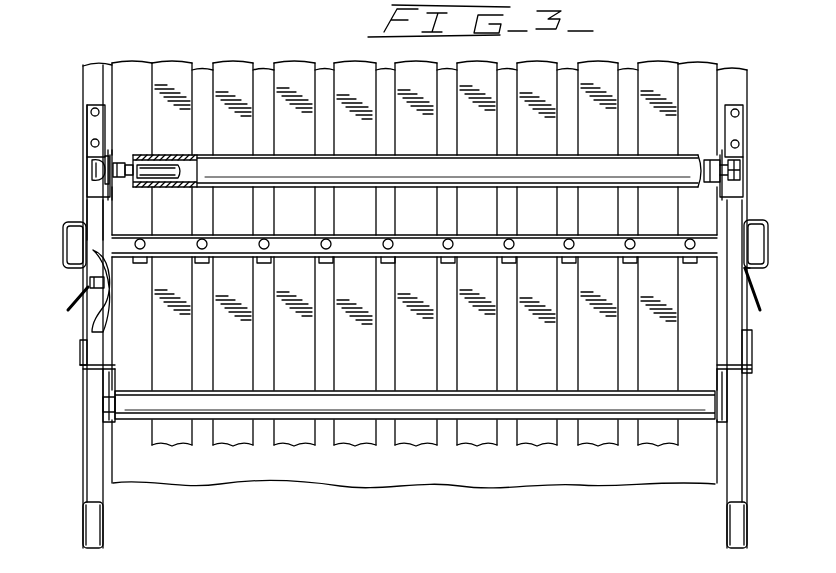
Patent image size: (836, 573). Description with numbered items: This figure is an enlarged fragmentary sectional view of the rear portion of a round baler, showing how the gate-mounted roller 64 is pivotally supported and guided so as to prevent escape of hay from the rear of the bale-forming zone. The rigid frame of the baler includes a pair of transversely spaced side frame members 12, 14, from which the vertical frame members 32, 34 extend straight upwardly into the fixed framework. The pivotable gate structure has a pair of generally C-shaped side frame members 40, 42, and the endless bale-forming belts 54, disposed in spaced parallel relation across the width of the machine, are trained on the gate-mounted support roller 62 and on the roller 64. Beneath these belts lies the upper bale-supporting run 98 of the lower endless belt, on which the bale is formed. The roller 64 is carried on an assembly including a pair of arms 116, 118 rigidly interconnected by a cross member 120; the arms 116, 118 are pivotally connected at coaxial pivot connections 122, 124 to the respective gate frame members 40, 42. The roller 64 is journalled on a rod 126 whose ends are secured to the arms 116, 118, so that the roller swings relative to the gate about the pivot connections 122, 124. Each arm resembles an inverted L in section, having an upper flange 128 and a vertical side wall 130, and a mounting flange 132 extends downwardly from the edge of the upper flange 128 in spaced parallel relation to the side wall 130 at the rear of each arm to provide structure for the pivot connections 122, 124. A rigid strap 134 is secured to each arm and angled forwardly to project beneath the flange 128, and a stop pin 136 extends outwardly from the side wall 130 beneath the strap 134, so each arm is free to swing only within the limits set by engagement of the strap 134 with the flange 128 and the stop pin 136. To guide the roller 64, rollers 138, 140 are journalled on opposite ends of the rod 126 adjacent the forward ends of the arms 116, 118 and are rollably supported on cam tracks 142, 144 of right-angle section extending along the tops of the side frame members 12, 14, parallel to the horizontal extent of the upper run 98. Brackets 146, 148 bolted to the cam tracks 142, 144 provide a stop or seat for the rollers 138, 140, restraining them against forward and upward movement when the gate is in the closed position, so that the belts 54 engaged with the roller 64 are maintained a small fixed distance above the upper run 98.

The side frame member 12 is at (93, 82).
The side frame member 14 is at (735, 84).
The vertical frame member 32 is at (65, 248).
The vertical frame member 34 is at (766, 252).
The side frame member of gate structure 40 is at (88, 471).
The side frame member of gate structure 42 is at (737, 477).
The endless bale-forming belts 54 is at (413, 430).
The support roller 62 is at (477, 405).
The roller 64 is at (240, 172).
The upper bale-supporting run 98 is at (590, 465).
The arm 116 is at (78, 213).
The arm 118 is at (756, 320).
The cross member 120 is at (430, 245).
The pivot connection 122 is at (78, 366).
The pivot connection 124 is at (752, 366).
The rod 126 is at (162, 162).
The upper flange 128 is at (103, 213).
The vertical side wall 130 is at (116, 384).
The mounting flange 132 is at (80, 353).
The rigid strap 134 is at (92, 310).
The stop pin 136 is at (90, 282).
The roller 138 is at (90, 168).
The roller 140 is at (744, 168).
The cam track 142 is at (86, 122).
The cam track 144 is at (748, 136).
The bracket 146 is at (98, 125).
The bracket 148 is at (724, 135).